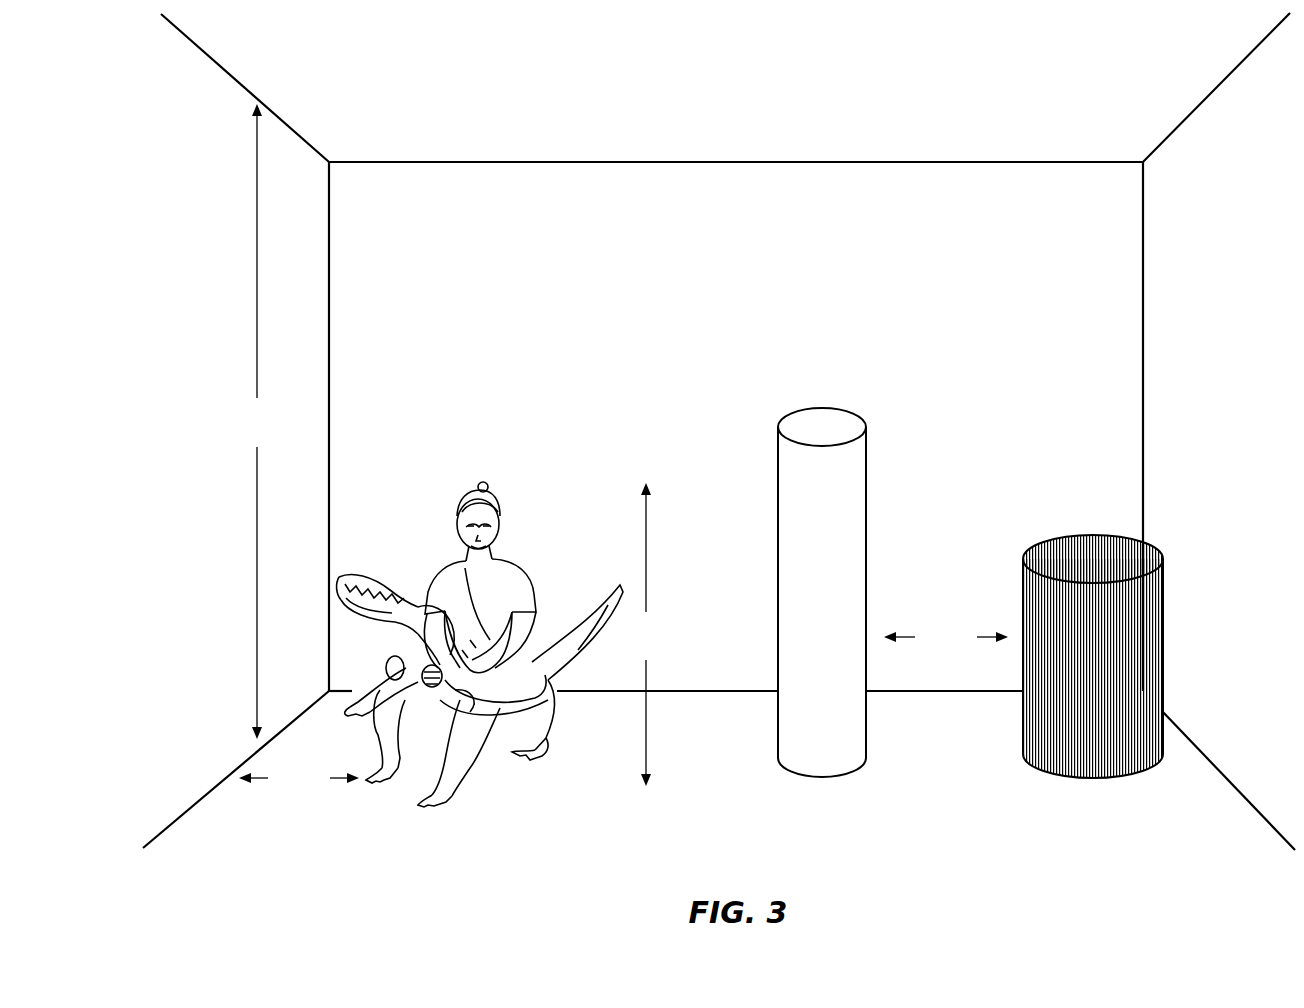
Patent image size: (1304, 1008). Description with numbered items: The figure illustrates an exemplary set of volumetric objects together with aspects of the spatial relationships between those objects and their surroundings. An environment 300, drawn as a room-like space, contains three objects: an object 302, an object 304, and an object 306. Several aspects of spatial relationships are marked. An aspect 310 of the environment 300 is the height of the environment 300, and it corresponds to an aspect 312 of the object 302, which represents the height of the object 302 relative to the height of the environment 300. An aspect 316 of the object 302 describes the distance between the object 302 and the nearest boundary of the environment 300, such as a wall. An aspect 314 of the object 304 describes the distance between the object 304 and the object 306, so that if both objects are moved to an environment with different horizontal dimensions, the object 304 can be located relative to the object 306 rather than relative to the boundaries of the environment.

The environment 300 is at (190, 204).
The object 302 is at (438, 519).
The object 304 is at (755, 471).
The object 306 is at (1093, 518).
The aspect 310 is at (257, 421).
The aspect 312 is at (646, 634).
The aspect 314 is at (946, 639).
The aspect 316 is at (299, 779).